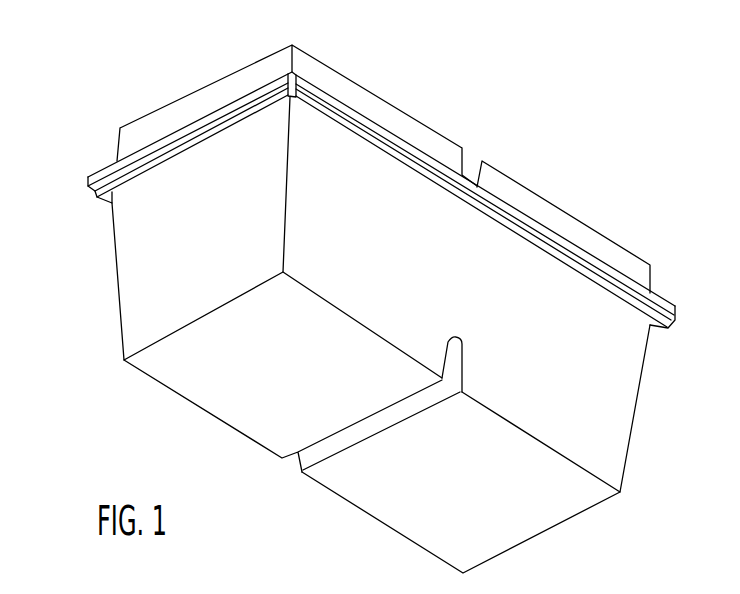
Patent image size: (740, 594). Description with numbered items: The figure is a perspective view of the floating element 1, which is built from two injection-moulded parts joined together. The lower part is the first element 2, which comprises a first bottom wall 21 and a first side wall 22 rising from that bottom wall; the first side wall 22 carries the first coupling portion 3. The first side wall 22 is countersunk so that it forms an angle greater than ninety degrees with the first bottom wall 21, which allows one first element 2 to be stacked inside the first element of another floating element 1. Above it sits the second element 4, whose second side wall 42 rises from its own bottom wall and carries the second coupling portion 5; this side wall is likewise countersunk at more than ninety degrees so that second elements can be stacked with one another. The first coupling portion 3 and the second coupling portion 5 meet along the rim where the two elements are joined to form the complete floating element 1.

The floating element 1 is at (617, 121).
The first element 2 is at (95, 350).
The first bottom wall 21 is at (235, 393).
The first side wall 22 is at (612, 434).
The first coupling portion 3 is at (96, 197).
The second element 4 is at (417, 105).
The second side wall 42 is at (552, 221).
The second coupling portion 5 is at (106, 166).